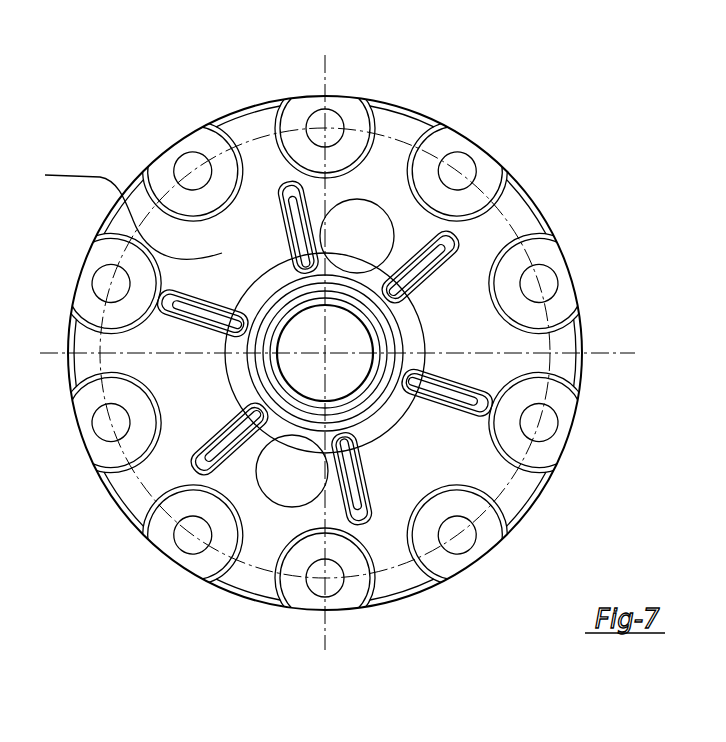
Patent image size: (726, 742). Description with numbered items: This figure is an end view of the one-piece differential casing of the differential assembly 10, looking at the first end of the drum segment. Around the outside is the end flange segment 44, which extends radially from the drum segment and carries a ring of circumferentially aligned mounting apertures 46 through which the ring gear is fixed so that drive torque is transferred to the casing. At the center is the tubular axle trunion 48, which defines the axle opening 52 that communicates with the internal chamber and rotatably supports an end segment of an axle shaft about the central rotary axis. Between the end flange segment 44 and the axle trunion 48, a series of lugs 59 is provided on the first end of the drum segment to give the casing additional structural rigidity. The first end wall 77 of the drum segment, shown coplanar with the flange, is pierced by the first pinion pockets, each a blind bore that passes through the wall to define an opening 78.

The differential assembly 10 is at (428, 102).
The end flange segment 44 is at (540, 497).
The mounting apertures 46 is at (188, 163).
The axle trunion 48 is at (377, 332).
The axle opening 52 is at (297, 367).
The lugs 59 is at (447, 386).
The first end wall 77 is at (116, 212).
The opening 78 is at (377, 223).